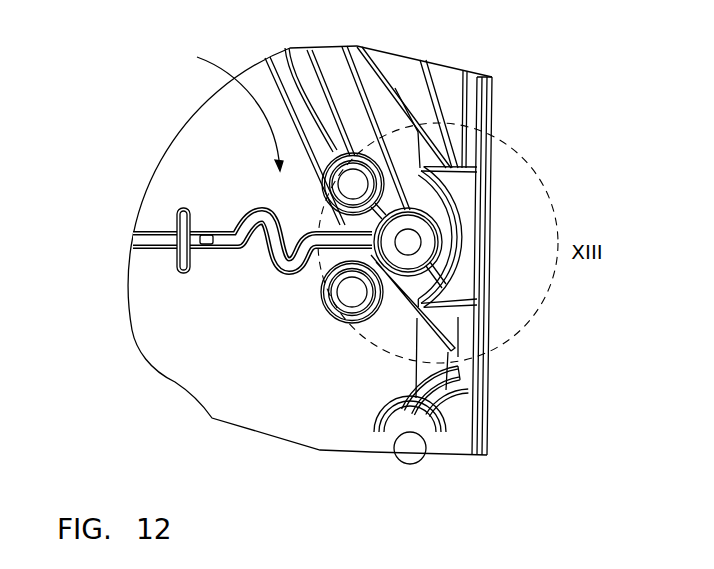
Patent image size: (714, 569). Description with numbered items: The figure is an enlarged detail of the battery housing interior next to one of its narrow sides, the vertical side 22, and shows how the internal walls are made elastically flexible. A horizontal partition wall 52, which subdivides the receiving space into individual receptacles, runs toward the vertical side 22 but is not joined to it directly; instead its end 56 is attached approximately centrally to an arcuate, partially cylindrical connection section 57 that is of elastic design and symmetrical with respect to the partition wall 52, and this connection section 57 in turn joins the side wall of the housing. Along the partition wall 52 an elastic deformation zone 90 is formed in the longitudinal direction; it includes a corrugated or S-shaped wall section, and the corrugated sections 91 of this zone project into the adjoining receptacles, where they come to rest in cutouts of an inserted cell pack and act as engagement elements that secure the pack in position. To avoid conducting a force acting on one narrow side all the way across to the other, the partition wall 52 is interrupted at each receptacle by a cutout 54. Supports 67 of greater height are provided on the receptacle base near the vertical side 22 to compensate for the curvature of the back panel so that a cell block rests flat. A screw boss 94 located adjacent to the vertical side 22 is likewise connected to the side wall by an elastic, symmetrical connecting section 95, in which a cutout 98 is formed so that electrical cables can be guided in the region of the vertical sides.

The vertical side 22 is at (493, 123).
The partition wall 52 is at (230, 230).
The cutout 54 is at (153, 214).
The end of the partition wall 56 is at (390, 233).
The connection section 57 is at (441, 300).
The support 67 is at (270, 62).
The elastic deformation zone 90 is at (226, 105).
The corrugated section 91 is at (263, 207).
The screw boss 94 is at (411, 456).
The connecting section 95 is at (433, 402).
The cutout 98 is at (440, 425).